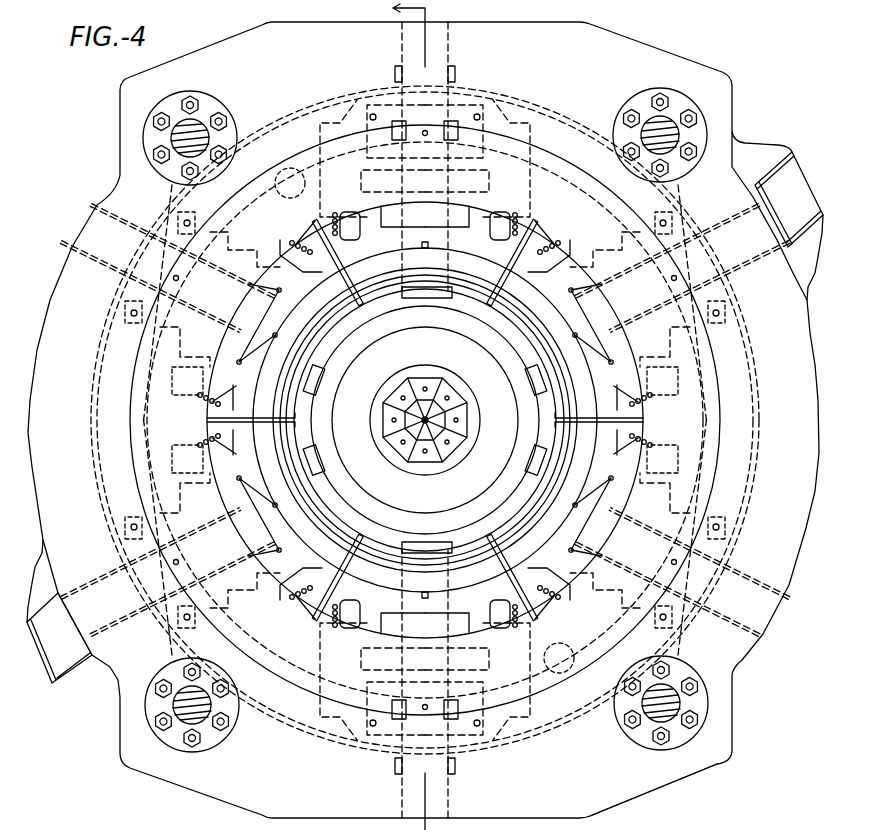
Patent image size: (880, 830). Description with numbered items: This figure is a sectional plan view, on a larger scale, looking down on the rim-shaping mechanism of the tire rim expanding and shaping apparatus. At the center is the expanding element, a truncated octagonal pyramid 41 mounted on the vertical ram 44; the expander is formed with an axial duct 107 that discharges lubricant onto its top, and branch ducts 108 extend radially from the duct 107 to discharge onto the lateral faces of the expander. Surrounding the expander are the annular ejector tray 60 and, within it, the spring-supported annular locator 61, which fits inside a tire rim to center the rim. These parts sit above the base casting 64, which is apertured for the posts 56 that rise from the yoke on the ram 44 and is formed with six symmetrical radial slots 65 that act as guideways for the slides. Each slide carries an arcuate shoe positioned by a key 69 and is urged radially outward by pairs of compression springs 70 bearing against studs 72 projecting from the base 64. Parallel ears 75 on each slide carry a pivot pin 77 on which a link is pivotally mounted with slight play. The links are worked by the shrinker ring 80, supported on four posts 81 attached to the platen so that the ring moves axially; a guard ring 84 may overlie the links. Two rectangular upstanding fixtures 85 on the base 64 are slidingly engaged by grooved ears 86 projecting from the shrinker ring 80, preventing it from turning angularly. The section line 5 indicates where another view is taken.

The section line 5- 5 is at (398, 416).
The truncated octagonal pyramid 41 is at (418, 440).
The vertical ram 44 is at (470, 390).
The posts 56 is at (289, 167).
The annular ejector tray 60 is at (499, 351).
The annular locator 61 is at (481, 371).
The base casting 64 is at (718, 665).
The radial slots 65 is at (428, 298).
The key 69 is at (283, 328).
The compression springs 70 is at (332, 215).
The studs 72 is at (230, 403).
The ears 75 is at (280, 253).
The pivot pin 77 is at (490, 193).
The shrinker ring 80 is at (620, 788).
The posts 81 is at (172, 138).
The guard ring 84 is at (748, 416).
The upstanding fixtures 85 is at (797, 182).
The grooved ears 86 is at (760, 150).
The axial duct 107 is at (422, 392).
The branch ducts 108 is at (403, 397).